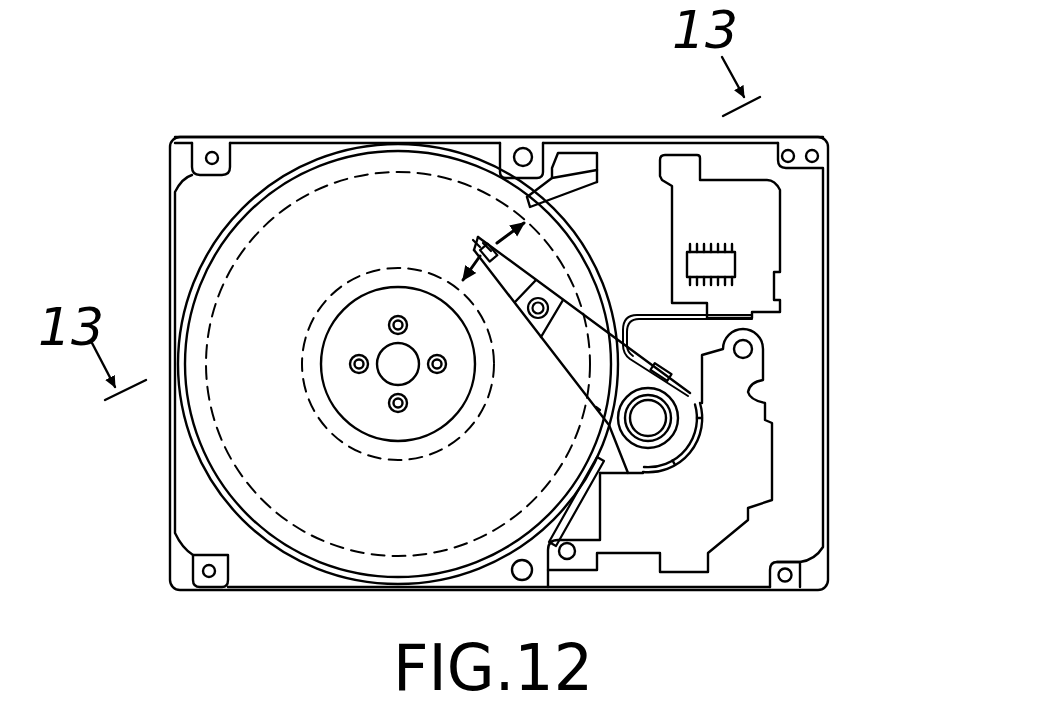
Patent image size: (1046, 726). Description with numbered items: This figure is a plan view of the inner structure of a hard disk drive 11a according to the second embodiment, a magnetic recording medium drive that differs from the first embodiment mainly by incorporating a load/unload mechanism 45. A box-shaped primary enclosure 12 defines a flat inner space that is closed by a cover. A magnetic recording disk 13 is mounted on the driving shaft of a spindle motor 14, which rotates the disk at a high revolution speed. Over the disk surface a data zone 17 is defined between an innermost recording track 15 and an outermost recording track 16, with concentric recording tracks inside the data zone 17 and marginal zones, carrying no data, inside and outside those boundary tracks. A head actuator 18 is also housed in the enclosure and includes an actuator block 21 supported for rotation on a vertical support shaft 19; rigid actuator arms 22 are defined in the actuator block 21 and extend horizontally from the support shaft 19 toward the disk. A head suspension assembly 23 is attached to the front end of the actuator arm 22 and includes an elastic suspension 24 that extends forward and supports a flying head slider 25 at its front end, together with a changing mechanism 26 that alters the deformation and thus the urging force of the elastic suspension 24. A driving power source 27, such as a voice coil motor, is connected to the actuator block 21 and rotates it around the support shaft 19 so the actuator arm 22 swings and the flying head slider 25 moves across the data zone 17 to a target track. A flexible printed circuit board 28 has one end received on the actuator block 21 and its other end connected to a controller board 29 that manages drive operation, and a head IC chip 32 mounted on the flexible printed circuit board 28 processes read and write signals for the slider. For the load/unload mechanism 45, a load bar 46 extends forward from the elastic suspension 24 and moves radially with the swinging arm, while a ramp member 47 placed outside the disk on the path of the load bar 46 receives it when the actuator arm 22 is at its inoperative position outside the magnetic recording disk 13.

The hard disk drive 11a is at (400, 138).
The primary enclosure 12 is at (170, 215).
The magnetic recording disk 13 is at (191, 290).
The spindle motor 14 is at (389, 377).
The innermost recording track 15 is at (327, 434).
The outermost recording track 16 is at (213, 362).
The data zone 17 is at (292, 298).
The head actuator 18 is at (606, 423).
The vertical support shaft 19 is at (667, 428).
The actuator block 21 is at (668, 452).
The actuator arm 22 is at (530, 368).
The head suspension assembly 23 is at (558, 297).
The elastic suspension 24 is at (506, 284).
The flying head slider 25 is at (472, 251).
The changing mechanism 26 is at (556, 292).
The driving power source 27 is at (566, 505).
The flexible printed circuit board 28 is at (620, 332).
The controller board 29 is at (766, 313).
The head IC chip 32 is at (657, 370).
The load/unload mechanism 45 is at (600, 158).
The load bar 46 is at (476, 238).
The ramp member 47 is at (561, 155).